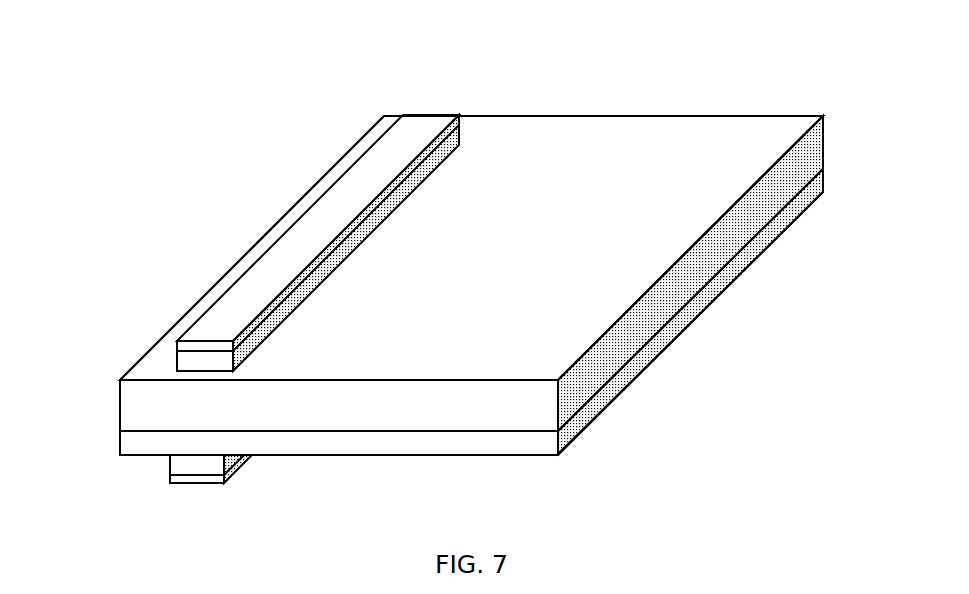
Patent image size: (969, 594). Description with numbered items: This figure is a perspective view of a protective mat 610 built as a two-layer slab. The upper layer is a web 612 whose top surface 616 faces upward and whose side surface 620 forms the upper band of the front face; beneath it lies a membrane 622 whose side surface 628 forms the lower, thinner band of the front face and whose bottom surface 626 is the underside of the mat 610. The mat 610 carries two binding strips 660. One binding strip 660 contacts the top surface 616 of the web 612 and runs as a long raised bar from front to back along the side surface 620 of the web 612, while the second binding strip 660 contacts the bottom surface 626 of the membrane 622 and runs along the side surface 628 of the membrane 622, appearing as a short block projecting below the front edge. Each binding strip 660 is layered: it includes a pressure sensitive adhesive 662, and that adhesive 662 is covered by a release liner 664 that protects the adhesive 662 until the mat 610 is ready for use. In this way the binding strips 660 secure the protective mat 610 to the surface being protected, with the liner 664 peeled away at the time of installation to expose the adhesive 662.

The mat 610 is at (592, 76).
The web 612 is at (758, 223).
The top surface 616 is at (673, 139).
The side surface 620 is at (130, 415).
The membrane 622 is at (692, 323).
The bottom surface 626 is at (547, 453).
The side surface 628 is at (132, 442).
The binding strip 660 is at (436, 99).
The pressure sensitive adhesive 662 is at (198, 364).
The release liner 664 is at (255, 293).